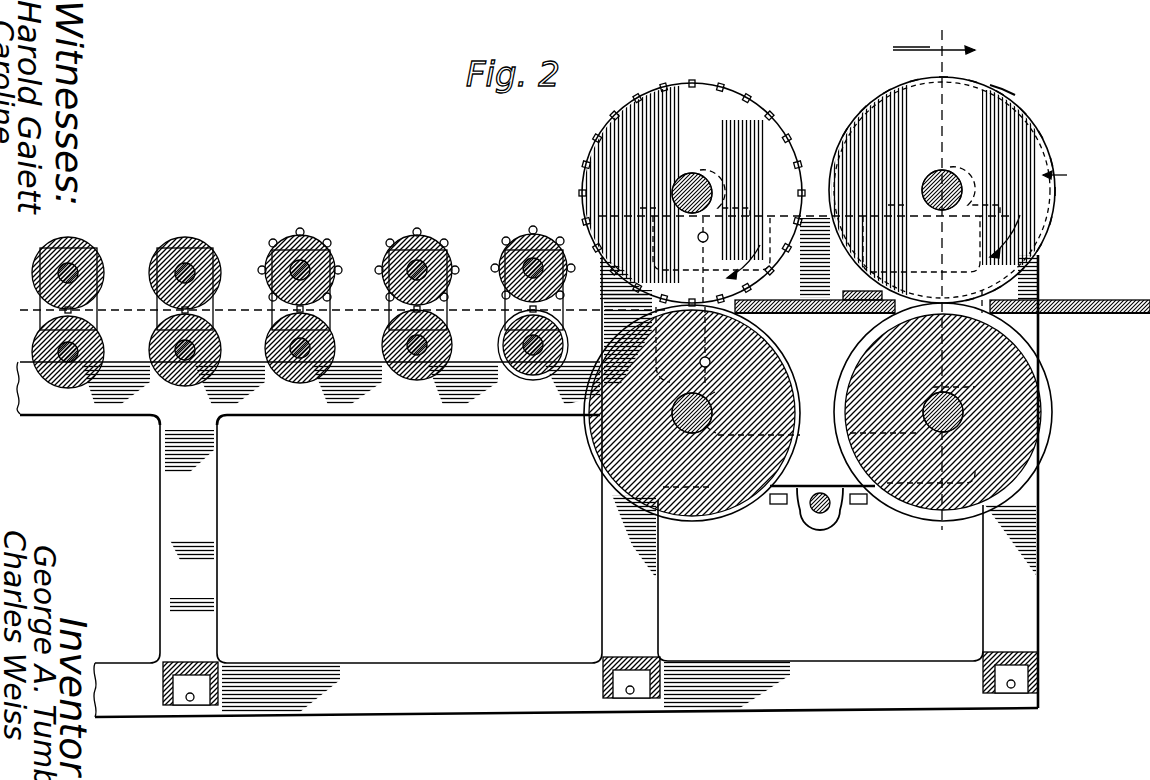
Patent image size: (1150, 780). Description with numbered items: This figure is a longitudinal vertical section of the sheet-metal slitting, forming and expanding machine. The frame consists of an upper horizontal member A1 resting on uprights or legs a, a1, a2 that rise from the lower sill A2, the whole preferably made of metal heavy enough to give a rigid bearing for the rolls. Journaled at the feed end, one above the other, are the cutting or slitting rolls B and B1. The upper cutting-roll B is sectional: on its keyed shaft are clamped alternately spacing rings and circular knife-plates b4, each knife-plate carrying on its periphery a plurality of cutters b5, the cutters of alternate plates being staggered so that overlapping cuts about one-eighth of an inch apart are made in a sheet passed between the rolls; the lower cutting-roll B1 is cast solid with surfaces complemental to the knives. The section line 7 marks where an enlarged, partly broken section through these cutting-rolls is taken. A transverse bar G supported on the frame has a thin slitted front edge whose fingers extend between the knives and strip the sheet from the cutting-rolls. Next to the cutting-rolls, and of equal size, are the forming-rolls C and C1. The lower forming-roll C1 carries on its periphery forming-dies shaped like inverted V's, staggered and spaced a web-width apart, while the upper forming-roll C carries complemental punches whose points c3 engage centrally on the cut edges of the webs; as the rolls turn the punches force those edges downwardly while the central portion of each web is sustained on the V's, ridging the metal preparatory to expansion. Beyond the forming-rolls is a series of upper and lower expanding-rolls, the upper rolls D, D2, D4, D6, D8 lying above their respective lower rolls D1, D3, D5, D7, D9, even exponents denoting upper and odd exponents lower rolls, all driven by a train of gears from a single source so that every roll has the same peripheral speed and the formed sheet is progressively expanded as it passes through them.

The upper expanding-roll D8 is at (82, 252).
The lower expanding-roll D9 is at (65, 385).
The upper expanding-roll D6 is at (200, 248).
The lower expanding-roll D7 is at (175, 385).
The upper expanding-roll D4 is at (315, 248).
The lower expanding-roll D5 is at (310, 385).
The upper expanding-roll D2 is at (438, 247).
The lower expanding-roll D3 is at (415, 382).
The upper expanding-roll D is at (534, 248).
The lower expanding-roll D1 is at (540, 385).
The upper forming-roll C is at (730, 107).
The punch points c3 is at (795, 110).
The lower forming-roll C1 is at (732, 505).
The upper cutting-roll B is at (956, 190).
The knife-plates b4 is at (910, 110).
The cutters b5 is at (990, 85).
The lower cutting-roll B1 is at (1030, 413).
The transverse bar G is at (862, 300).
The upper horizontal frame member A1 is at (495, 397).
The lower sill A2 is at (478, 670).
The upright a is at (1025, 600).
The upright a1 is at (648, 612).
The upright a2 is at (207, 614).
The section line 7 7 is at (934, 280).